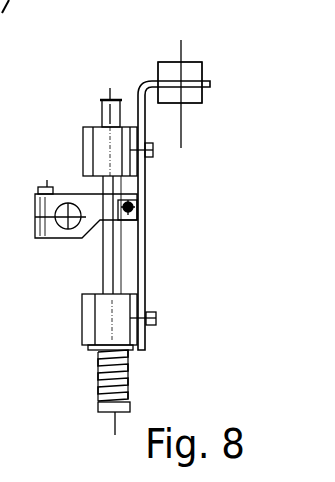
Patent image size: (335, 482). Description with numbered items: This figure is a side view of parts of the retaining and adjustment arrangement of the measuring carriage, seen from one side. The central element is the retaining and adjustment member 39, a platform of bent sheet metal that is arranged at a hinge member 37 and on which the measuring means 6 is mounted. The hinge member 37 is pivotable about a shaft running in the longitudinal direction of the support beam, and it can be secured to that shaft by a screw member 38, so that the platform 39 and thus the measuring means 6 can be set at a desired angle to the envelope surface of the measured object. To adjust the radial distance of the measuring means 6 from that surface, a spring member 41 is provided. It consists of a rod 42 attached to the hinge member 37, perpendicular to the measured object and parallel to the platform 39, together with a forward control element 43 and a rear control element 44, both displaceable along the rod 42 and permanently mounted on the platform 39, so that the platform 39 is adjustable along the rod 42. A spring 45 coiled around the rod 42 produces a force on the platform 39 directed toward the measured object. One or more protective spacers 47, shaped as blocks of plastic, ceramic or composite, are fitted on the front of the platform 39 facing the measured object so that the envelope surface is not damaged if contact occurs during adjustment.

The measuring means 6 is at (165, 66).
The protective spacer 47 is at (180, 82).
The hinge member 37 is at (77, 238).
The screw member 38 is at (40, 190).
The retaining and adjustment member 39 is at (147, 170).
The spring member 41 is at (61, 386).
The rod 42 is at (112, 250).
The forward control element 43 is at (100, 138).
The rear control element 44 is at (88, 320).
The spring 45 is at (120, 377).